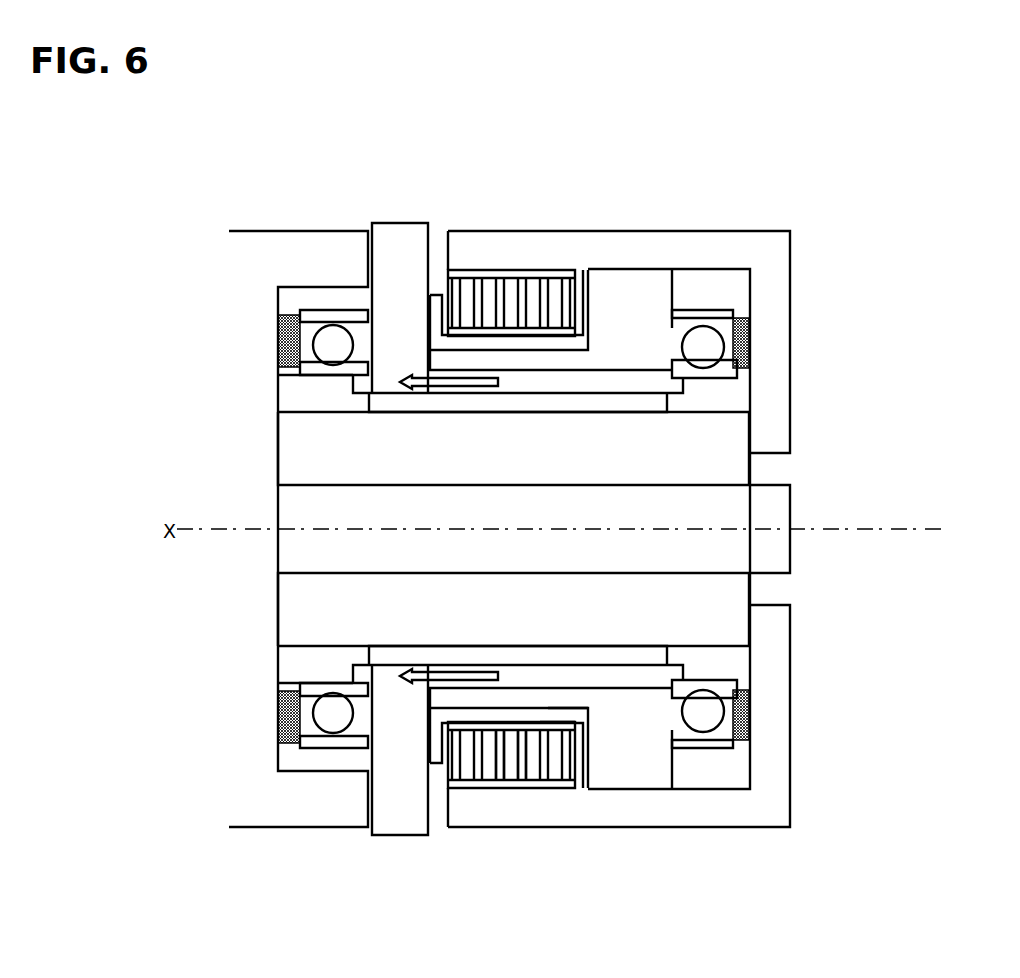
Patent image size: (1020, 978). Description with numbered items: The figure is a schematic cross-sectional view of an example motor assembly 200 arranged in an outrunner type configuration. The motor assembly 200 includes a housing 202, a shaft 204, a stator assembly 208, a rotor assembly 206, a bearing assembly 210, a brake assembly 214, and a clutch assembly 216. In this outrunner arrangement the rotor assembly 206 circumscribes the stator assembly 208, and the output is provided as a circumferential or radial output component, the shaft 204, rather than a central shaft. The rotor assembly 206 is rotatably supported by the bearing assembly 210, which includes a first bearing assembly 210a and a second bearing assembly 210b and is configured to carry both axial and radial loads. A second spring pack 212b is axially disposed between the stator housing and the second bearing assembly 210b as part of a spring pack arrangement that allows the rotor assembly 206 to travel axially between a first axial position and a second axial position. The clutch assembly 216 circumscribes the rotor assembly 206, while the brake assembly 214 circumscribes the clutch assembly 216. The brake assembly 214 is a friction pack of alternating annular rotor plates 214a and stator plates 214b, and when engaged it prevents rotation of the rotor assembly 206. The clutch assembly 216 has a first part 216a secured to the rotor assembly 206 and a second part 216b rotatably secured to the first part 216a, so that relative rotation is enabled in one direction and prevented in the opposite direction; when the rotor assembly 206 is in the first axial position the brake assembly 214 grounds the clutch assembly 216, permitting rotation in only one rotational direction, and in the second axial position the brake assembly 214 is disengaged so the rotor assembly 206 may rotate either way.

The motor assembly 200 is at (205, 178).
The housing 202 is at (277, 817).
The shaft 204 is at (397, 797).
The rotor assembly 206 is at (373, 672).
The stator assembly 208 is at (342, 620).
The bearing assembly 210 is at (320, 345).
The first bearing assembly 210a is at (287, 343).
The second bearing assembly 210b is at (722, 323).
The second spring pack 212b is at (748, 353).
The brake assembly 214 is at (467, 780).
The rotor plates 214a is at (532, 770).
The stator plates 214b is at (517, 757).
The clutch assembly 216 is at (540, 715).
The first part 216a is at (557, 717).
The second part 216b is at (567, 695).